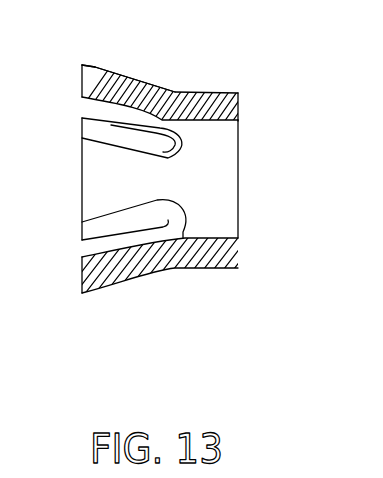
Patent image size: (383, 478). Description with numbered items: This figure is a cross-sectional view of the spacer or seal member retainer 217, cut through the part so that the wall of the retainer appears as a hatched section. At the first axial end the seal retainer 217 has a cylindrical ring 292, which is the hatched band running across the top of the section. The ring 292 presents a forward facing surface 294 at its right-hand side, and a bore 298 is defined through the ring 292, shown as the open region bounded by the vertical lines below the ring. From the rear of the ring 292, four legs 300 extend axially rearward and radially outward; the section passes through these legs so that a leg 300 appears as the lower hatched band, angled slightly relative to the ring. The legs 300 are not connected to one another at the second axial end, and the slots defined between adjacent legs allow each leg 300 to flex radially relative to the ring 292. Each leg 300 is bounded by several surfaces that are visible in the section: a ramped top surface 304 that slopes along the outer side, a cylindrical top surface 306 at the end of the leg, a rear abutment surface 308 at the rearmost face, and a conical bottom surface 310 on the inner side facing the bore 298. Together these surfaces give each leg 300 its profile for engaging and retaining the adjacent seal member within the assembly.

The seal member retainer 217 is at (209, 41).
The cylindrical ring 292 is at (212, 93).
The forward facing surface 294 is at (238, 103).
The bore 298 is at (217, 181).
The leg 300 is at (114, 264).
The ramped top surface 304 is at (131, 100).
The cylindrical top surface 306 is at (81, 86).
The rear abutment surface 308 is at (80, 83).
The conical bottom surface 310 is at (131, 100).